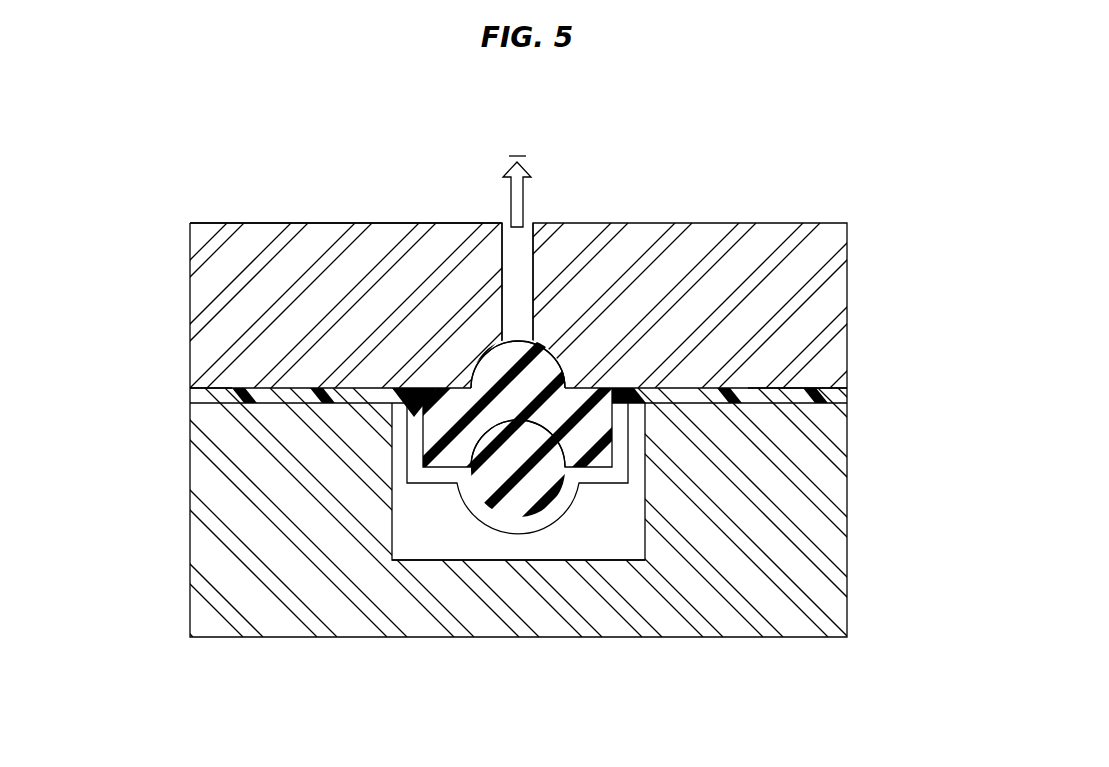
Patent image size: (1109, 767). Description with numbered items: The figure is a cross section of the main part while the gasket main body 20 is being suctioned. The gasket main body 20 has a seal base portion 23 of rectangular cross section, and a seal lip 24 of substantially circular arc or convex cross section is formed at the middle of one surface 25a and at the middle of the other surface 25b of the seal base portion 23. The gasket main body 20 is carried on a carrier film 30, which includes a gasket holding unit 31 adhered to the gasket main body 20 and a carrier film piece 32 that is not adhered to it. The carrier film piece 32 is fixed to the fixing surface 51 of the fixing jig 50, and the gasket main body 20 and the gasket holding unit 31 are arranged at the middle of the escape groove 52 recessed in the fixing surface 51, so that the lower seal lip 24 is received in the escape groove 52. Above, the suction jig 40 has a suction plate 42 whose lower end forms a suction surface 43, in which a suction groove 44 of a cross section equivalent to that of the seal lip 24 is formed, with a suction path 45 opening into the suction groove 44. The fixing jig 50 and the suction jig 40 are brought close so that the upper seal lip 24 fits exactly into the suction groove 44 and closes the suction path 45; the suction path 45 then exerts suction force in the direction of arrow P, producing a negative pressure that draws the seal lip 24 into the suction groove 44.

The gasket main body 20 is at (586, 384).
The seal base portion 23 is at (610, 463).
The seal lip 24 is at (430, 392).
The one surface in the thickness direction 25a is at (500, 377).
The another surface in the thickness direction 25b is at (442, 475).
The carrier film 30 is at (672, 384).
The gasket holding unit 31 is at (417, 462).
The carrier film piece 32 is at (748, 388).
The suction jig 40 is at (170, 202).
The suction plate 42 is at (208, 293).
The suction surface 43 is at (303, 388).
The suction groove 44 is at (540, 370).
The suction path 45 is at (514, 296).
The fixing jig 50 is at (865, 462).
The fixing surface 51 is at (225, 383).
The escape groove 52 is at (640, 533).